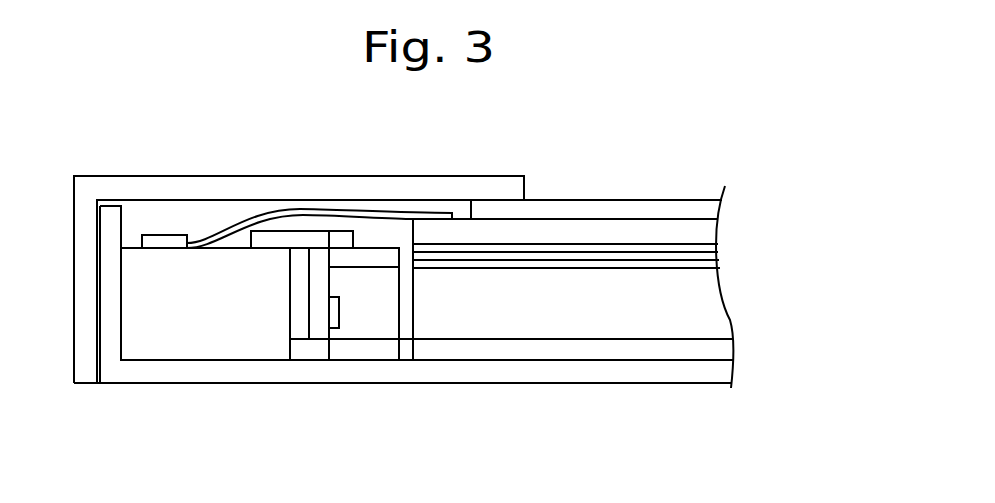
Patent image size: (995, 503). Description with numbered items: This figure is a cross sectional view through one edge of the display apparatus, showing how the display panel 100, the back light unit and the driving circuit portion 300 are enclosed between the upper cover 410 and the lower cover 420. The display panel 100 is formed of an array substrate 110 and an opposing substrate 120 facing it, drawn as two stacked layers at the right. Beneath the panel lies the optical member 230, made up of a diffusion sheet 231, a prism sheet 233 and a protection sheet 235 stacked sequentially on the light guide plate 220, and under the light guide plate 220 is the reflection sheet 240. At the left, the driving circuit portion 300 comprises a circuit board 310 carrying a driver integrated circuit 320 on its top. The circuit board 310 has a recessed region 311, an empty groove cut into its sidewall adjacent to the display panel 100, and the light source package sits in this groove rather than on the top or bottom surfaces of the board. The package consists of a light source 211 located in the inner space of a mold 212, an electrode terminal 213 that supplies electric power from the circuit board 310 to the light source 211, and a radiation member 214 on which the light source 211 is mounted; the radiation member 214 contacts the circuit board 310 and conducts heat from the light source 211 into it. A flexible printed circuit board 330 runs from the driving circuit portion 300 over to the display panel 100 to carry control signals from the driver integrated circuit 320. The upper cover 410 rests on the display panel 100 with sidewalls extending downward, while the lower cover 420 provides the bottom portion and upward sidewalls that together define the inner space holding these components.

The display panel 100 is at (807, 192).
The array substrate 110 is at (713, 230).
The opposing substrate 120 is at (713, 215).
The light source 211 is at (335, 314).
The mold 212 is at (351, 352).
The electrode terminal 213 is at (343, 240).
The radiation member 214 is at (321, 333).
The light guide plate 220 is at (722, 317).
The optical member 230 is at (807, 242).
The diffusion sheet 231 is at (713, 263).
The prism sheet 233 is at (713, 255).
The protection sheet 235 is at (713, 247).
The reflection sheet 240 is at (722, 348).
The driving circuit portion 300 is at (207, 438).
The circuit board 310 is at (190, 347).
The recessed region 311 is at (290, 307).
The driver integrated circuit 320 is at (160, 243).
The flexible printed circuit board 330 is at (262, 220).
The upper cover 410 is at (87, 334).
The lower cover 420 is at (513, 372).